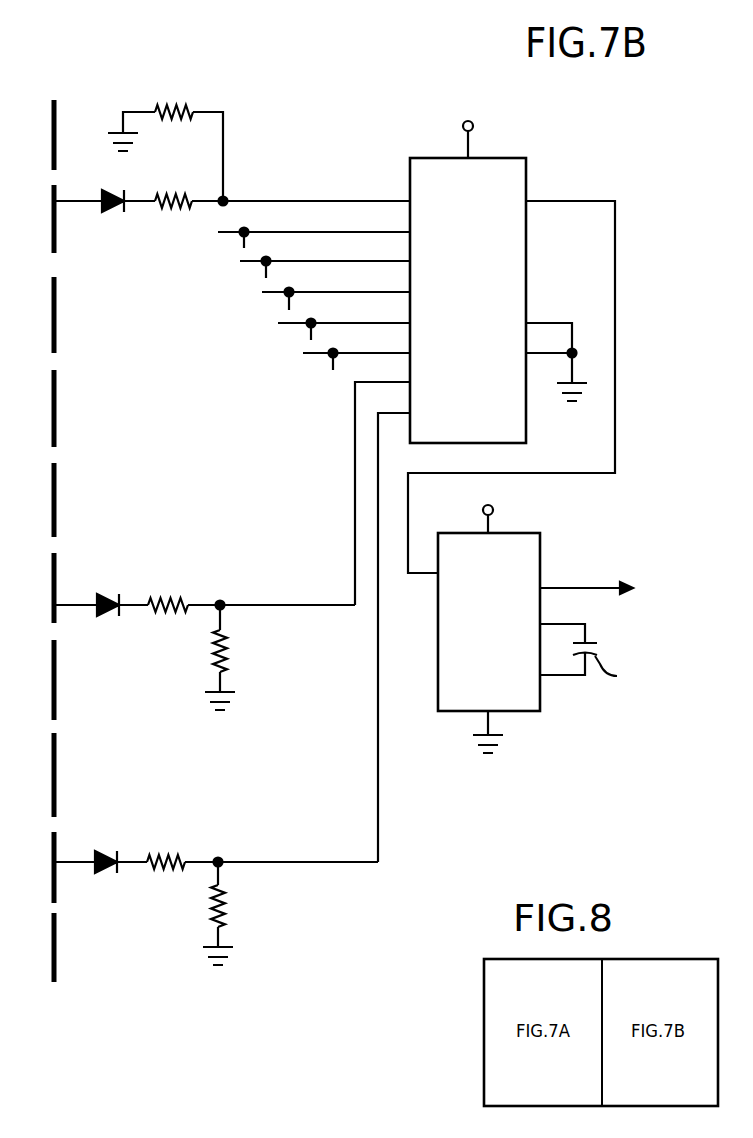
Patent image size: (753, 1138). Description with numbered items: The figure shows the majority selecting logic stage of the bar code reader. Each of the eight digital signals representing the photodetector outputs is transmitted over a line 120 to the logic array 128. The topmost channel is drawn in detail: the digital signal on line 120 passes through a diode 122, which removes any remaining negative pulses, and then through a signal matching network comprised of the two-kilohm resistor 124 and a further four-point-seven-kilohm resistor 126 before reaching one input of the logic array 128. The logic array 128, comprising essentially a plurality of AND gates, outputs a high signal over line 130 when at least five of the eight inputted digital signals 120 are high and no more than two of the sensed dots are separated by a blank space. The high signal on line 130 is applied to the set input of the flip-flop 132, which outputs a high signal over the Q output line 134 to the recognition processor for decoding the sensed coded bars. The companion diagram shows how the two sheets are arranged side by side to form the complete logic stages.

The line 120 is at (75, 203).
The diode 122 is at (110, 192).
The 2K resistor 124 is at (186, 205).
The 4.7K resistor 126 is at (165, 118).
The logic array 128 is at (524, 168).
The line 130 is at (617, 342).
The flip-flop 132 is at (534, 548).
The Q output line 134 is at (592, 588).